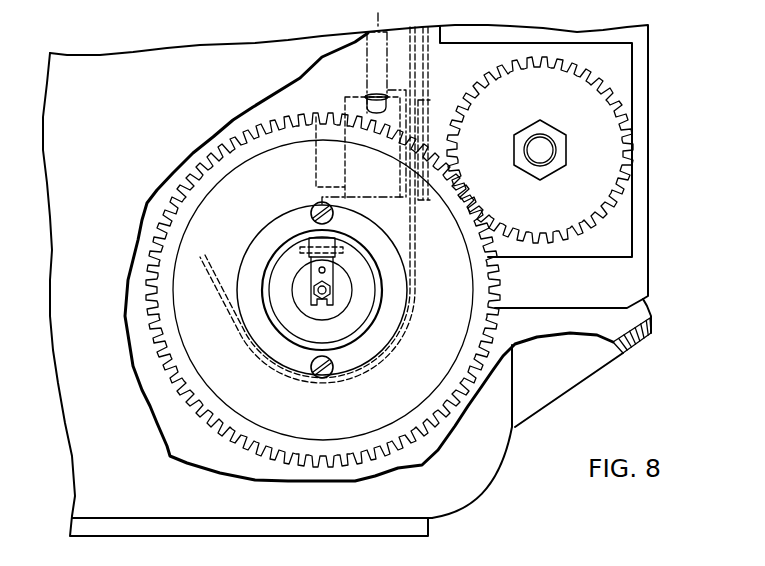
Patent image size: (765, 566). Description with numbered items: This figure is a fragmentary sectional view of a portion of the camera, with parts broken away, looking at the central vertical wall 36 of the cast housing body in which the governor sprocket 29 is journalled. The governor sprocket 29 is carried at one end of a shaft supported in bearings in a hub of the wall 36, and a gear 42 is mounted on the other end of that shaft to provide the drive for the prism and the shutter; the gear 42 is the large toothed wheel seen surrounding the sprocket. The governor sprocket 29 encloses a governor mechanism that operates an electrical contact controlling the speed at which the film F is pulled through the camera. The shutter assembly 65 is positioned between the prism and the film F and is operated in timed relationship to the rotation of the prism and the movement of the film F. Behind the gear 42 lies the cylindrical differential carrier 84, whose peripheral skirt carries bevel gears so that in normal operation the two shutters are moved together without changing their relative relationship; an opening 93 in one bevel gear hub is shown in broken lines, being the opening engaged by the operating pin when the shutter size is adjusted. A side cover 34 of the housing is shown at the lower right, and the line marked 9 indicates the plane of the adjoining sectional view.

The vertical wall 36 is at (167, 183).
The gear 42 is at (153, 245).
The governor sprocket 29 is at (412, 326).
The opening 93 is at (380, 100).
The differential carrier 84 is at (353, 157).
The shutter assembly 65 is at (434, 71).
The film F is at (415, 230).
The side cover 34 is at (477, 480).
The section line 9- 9 is at (378, 13).